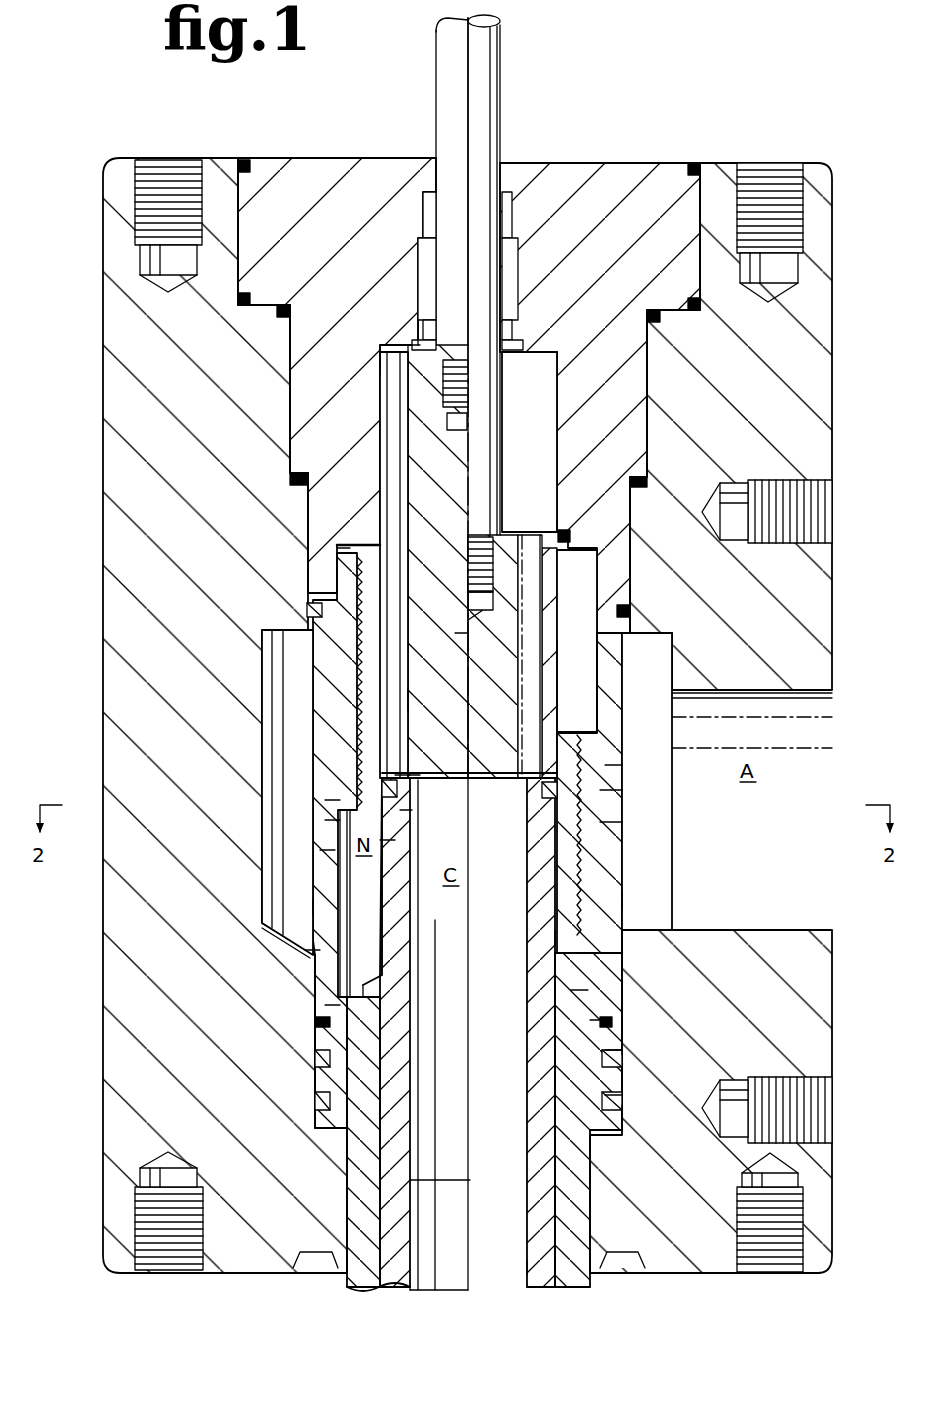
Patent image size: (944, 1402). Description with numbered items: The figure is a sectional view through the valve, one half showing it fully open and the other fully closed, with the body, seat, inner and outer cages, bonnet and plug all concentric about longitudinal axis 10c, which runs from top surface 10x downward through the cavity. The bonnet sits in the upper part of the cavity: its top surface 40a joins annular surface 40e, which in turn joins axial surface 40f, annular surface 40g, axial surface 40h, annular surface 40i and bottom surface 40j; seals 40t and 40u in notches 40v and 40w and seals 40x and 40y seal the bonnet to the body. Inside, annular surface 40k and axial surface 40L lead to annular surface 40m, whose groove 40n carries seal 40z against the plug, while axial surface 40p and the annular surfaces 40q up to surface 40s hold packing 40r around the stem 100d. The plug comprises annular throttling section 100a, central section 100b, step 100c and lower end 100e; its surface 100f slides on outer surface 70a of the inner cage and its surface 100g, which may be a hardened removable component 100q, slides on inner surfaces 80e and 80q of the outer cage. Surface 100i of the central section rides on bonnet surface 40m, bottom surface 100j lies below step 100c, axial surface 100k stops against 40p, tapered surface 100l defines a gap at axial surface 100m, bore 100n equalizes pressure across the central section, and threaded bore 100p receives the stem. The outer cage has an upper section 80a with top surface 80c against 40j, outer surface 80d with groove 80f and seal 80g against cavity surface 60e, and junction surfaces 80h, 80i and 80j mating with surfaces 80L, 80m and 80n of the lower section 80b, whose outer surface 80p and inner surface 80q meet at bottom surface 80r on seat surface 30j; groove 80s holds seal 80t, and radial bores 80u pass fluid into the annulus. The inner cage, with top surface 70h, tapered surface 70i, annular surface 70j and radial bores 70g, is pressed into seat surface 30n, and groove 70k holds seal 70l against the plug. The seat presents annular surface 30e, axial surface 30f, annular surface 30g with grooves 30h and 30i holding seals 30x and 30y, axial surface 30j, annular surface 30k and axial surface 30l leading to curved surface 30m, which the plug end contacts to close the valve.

The top surface 10x is at (120, 158).
The longitudinal axis 10c is at (468, 1182).
The valve stem 100d is at (436, 50).
The annular throttling section 100a is at (605, 945).
The central section 100b is at (462, 680).
The step 100c is at (343, 548).
The lower end 100e is at (385, 840).
The annular surface 100f is at (440, 680).
The annular surface 100g is at (560, 935).
The annular surface 100i is at (385, 440).
The bottom surface 100j is at (455, 633).
The axial surface 100k is at (380, 360).
The tapered surface 100l is at (380, 340).
The axial surface 100m is at (400, 345).
The bore 100n is at (412, 565).
The threaded bore 100p is at (423, 330).
The removable component 100q is at (337, 549).
The top surface 40a is at (630, 163).
The annular surface 40e is at (700, 190).
The axial surface 40f is at (652, 322).
The annular surface 40g is at (648, 405).
The axial surface 40h is at (640, 477).
The annular surface 40i is at (630, 505).
The bottom surface 40j is at (632, 598).
The annular surface 40k is at (574, 532).
The axial surface 40L is at (577, 641).
The annular surface 40m is at (529, 387).
The circumferential groove 40n is at (568, 532).
The axial surface 40p is at (529, 442).
The annular surfaces 40q is at (430, 265).
The packing 40r is at (512, 275).
The annular surface 40s is at (505, 163).
The seal 40t is at (695, 163).
The seal 40u is at (690, 320).
The circumferential notch 40v is at (688, 175).
The circumferential notch 40w is at (688, 303).
The seal 40x is at (648, 315).
The seal 40y is at (640, 489).
The seal 40z is at (558, 535).
The annular surface 60e is at (630, 562).
The upper section 80a is at (625, 752).
The lower section 80b is at (625, 900).
The top surface 80c is at (315, 600).
The outer annular surface 80d is at (310, 608).
The inner annular surface 80e is at (576, 683).
The circumferential groove 80f is at (647, 781).
The seal 80g is at (640, 622).
The surface 80h is at (330, 822).
The surface 80i is at (330, 803).
The surface 80j is at (320, 790).
The surface 80L is at (612, 768).
The surface 80m is at (605, 790).
The surface 80n is at (602, 825).
The outer annular surface 80p is at (320, 905).
The inner annular surface 80q is at (338, 975).
The bottom surface 80r is at (322, 1060).
The circumferential groove 80s is at (330, 1010).
The seal 80t is at (322, 1022).
The radially disposed bores 80u is at (315, 950).
The outer annular surface 70a is at (553, 1235).
The radially disposed bores 70g is at (365, 985).
The top surface 70h is at (400, 775).
The tapered surface 70i is at (433, 757).
The annular surface 70j is at (528, 1265).
The circumferential groove 70k is at (408, 810).
The seal 70l is at (397, 790).
The annular surface 30e is at (590, 1225).
The axial surface 30f is at (622, 1130).
The annular surface 30g is at (622, 1112).
The circumferential groove 30h is at (603, 1108).
The circumferential groove 30i is at (603, 1062).
The axial surface 30j is at (622, 1047).
The annular surface 30k is at (612, 1020).
The axial surface 30l is at (600, 1022).
The curved surface 30m is at (578, 993).
The annular surface 30n is at (545, 1208).
The seal 30x is at (605, 1102).
The seal 30y is at (610, 1055).